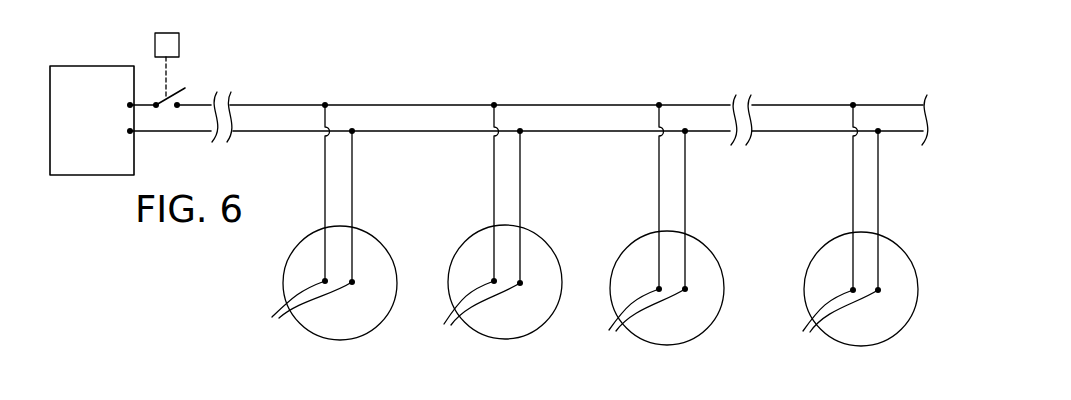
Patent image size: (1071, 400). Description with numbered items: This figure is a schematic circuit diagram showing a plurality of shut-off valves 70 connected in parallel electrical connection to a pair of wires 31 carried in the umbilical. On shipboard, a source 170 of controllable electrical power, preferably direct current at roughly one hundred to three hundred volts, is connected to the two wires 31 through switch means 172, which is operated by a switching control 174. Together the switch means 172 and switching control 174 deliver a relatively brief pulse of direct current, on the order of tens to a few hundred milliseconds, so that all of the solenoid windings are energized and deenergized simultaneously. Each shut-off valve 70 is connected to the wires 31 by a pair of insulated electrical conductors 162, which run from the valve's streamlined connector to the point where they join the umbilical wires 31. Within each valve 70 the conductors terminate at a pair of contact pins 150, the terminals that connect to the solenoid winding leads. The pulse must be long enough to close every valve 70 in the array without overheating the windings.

The source of controllable electrical power 170 is at (116, 47).
The switching control 174 is at (179, 43).
The switch means 172 is at (197, 85).
The pair of wires 31 is at (598, 131).
The insulated electrical conductors 162 is at (325, 207).
The shut-off valve 70 is at (274, 285).
The contact pins 150 is at (566, 318).